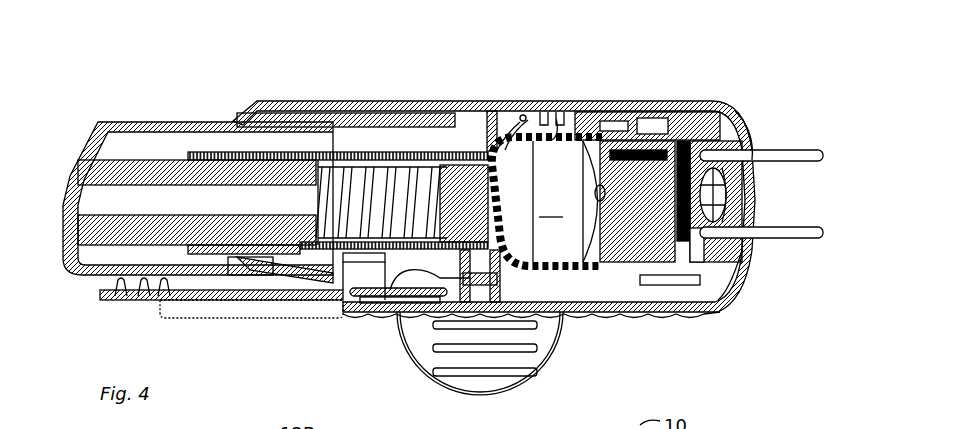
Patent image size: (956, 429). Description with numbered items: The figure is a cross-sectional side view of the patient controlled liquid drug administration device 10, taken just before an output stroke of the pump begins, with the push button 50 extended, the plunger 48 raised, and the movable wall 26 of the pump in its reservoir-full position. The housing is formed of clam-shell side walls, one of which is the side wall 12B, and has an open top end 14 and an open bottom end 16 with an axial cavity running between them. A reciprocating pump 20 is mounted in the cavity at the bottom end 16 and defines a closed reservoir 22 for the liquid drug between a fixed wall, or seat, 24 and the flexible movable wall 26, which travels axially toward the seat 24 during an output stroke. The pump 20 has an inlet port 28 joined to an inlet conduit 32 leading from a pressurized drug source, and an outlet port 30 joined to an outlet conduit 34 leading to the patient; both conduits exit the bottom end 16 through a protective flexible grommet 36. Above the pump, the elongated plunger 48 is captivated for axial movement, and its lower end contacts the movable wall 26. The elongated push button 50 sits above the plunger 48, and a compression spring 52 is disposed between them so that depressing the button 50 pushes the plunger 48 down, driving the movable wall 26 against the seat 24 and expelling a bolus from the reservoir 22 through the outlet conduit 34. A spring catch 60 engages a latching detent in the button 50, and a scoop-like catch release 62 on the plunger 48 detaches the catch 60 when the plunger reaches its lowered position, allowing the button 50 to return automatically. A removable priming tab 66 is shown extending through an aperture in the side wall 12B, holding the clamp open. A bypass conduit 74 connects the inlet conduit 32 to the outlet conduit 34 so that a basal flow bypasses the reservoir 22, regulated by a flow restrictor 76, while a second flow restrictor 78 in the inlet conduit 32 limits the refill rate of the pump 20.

The patient controlled liquid drug administration device 10 is at (622, 53).
The clam-shell side wall 12B is at (280, 103).
The open top end 14 is at (233, 118).
The open bottom end 16 is at (735, 130).
The reciprocating pump 20 is at (665, 275).
The closed reservoir 22 is at (547, 201).
The fixed wall (seat) 24 is at (590, 228).
The movable flexible wall 26 is at (548, 137).
The inlet port 28 is at (565, 112).
The outlet port 30 is at (595, 190).
The inlet conduit 32 is at (777, 150).
The outlet conduit 34 is at (770, 240).
The flexible grommet 36 is at (750, 270).
The plunger 48 is at (370, 165).
The push button 50 is at (92, 130).
The compression spring 52 is at (400, 198).
The spring catch 60 is at (410, 270).
The catch release 62 is at (276, 290).
The priming tab 66 is at (548, 342).
The bypass conduit 74 is at (747, 182).
The flow restrictor 76 is at (750, 215).
The second flow restrictor 78 is at (650, 118).